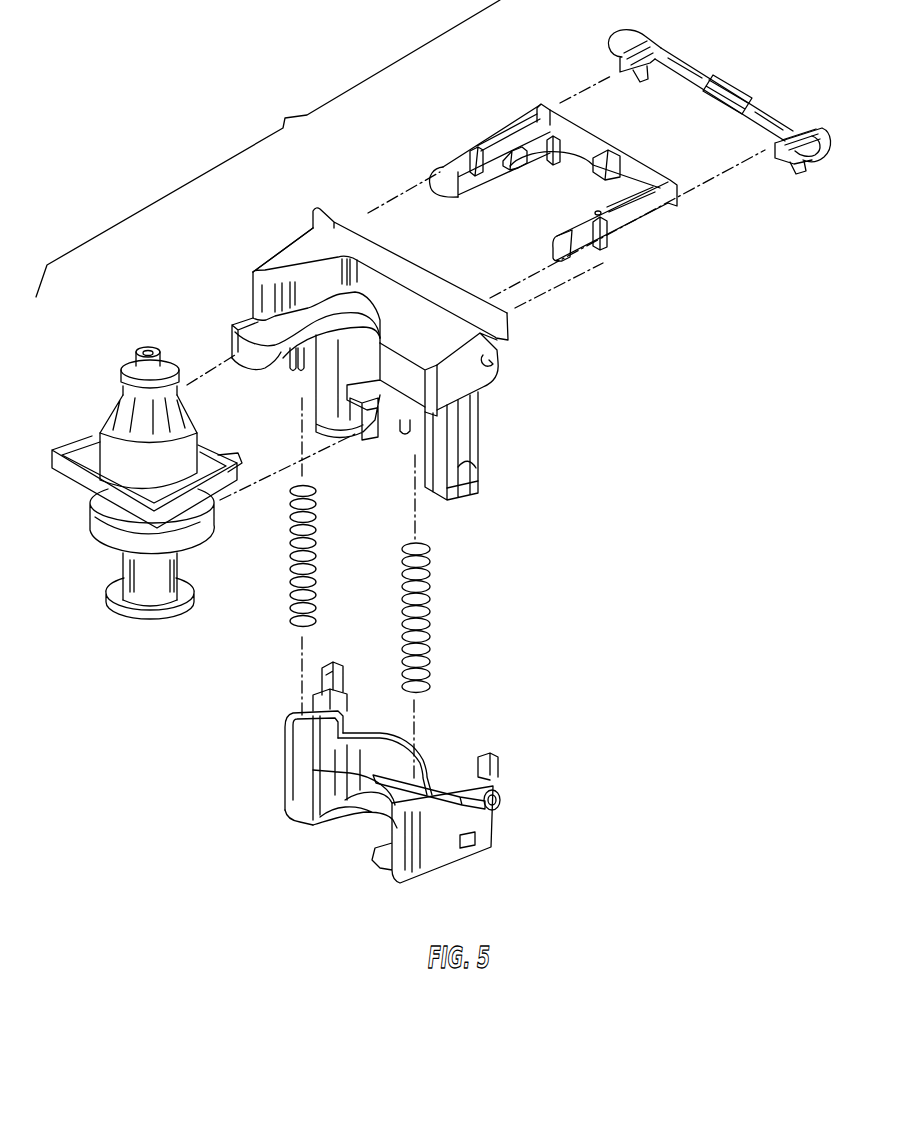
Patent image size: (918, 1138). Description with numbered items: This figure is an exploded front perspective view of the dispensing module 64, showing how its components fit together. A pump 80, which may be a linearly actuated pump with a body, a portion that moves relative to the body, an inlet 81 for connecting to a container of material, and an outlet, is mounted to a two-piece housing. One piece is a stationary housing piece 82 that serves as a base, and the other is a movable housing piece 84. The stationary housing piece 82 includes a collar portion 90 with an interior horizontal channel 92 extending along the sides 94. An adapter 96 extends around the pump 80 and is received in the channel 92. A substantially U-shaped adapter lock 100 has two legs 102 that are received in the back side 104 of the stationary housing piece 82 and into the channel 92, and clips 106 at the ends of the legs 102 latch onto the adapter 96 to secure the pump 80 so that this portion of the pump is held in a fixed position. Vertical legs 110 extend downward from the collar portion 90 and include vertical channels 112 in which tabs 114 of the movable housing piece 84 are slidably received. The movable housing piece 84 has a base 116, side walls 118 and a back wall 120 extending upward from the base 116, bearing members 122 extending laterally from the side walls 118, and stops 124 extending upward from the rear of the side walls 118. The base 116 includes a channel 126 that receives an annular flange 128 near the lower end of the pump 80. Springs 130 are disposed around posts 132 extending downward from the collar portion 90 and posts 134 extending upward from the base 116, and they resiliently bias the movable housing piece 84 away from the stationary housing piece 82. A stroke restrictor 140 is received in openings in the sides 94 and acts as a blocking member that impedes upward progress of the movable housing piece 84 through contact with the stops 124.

The dispensing module 64 is at (284, 118).
The pump 80 is at (133, 492).
The inlet 81 is at (142, 351).
The stationary housing piece 82 is at (361, 337).
The movable housing piece 84 is at (391, 766).
The collar portion 90 is at (243, 322).
The interior horizontal channel 92 is at (243, 346).
The sides 94 is at (249, 289).
The adapter 96 is at (73, 487).
The adapter lock 100 is at (550, 211).
The legs 102 is at (458, 178).
The back side 104 is at (345, 212).
The clips 106 is at (447, 192).
The vertical legs 110 is at (478, 438).
The vertical channels 112 is at (462, 472).
The tabs 114 is at (340, 705).
The base 116 is at (350, 832).
The side walls 118 is at (300, 725).
The back wall 120 is at (395, 758).
The bearing members 122 is at (490, 795).
The stops 124 is at (318, 678).
The channel 126 is at (315, 828).
The annular flange 128 is at (162, 607).
The springs 130 is at (318, 562).
The posts 132 is at (297, 372).
The posts 134 is at (307, 790).
The stroke restrictor 140 is at (672, 52).